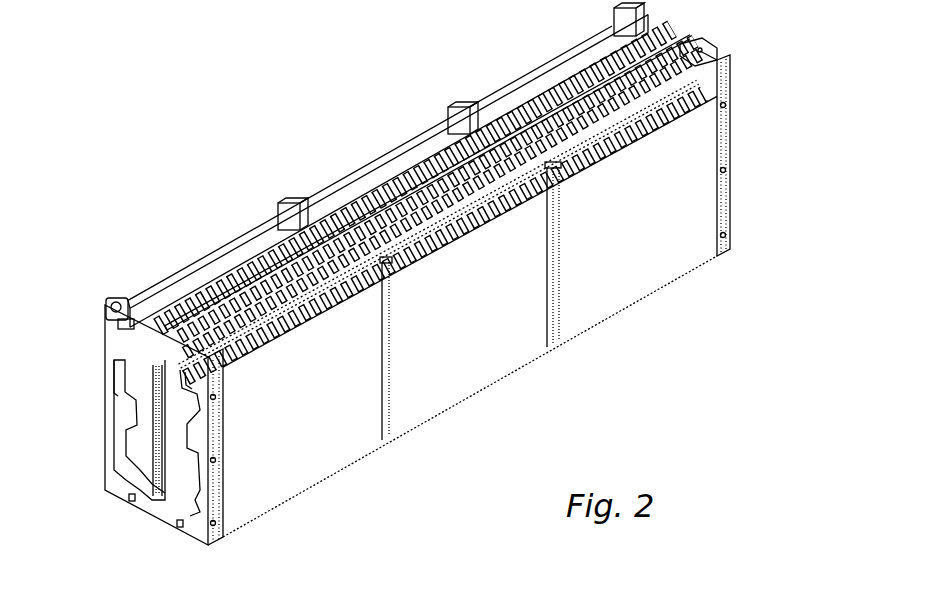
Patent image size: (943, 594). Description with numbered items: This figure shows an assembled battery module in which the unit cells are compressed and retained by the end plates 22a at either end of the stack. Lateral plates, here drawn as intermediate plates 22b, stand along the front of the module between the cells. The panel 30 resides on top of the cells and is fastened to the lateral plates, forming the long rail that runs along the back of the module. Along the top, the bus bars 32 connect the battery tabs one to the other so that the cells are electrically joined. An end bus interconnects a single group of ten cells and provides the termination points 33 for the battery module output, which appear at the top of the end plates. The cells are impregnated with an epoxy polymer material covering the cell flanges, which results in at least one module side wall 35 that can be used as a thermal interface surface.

The end plate 22a is at (733, 183).
The divider plate 22b is at (565, 335).
The panel 30 is at (345, 195).
The bus bar 32 is at (432, 165).
The termination point 33 is at (700, 46).
The module side wall 35 is at (627, 259).